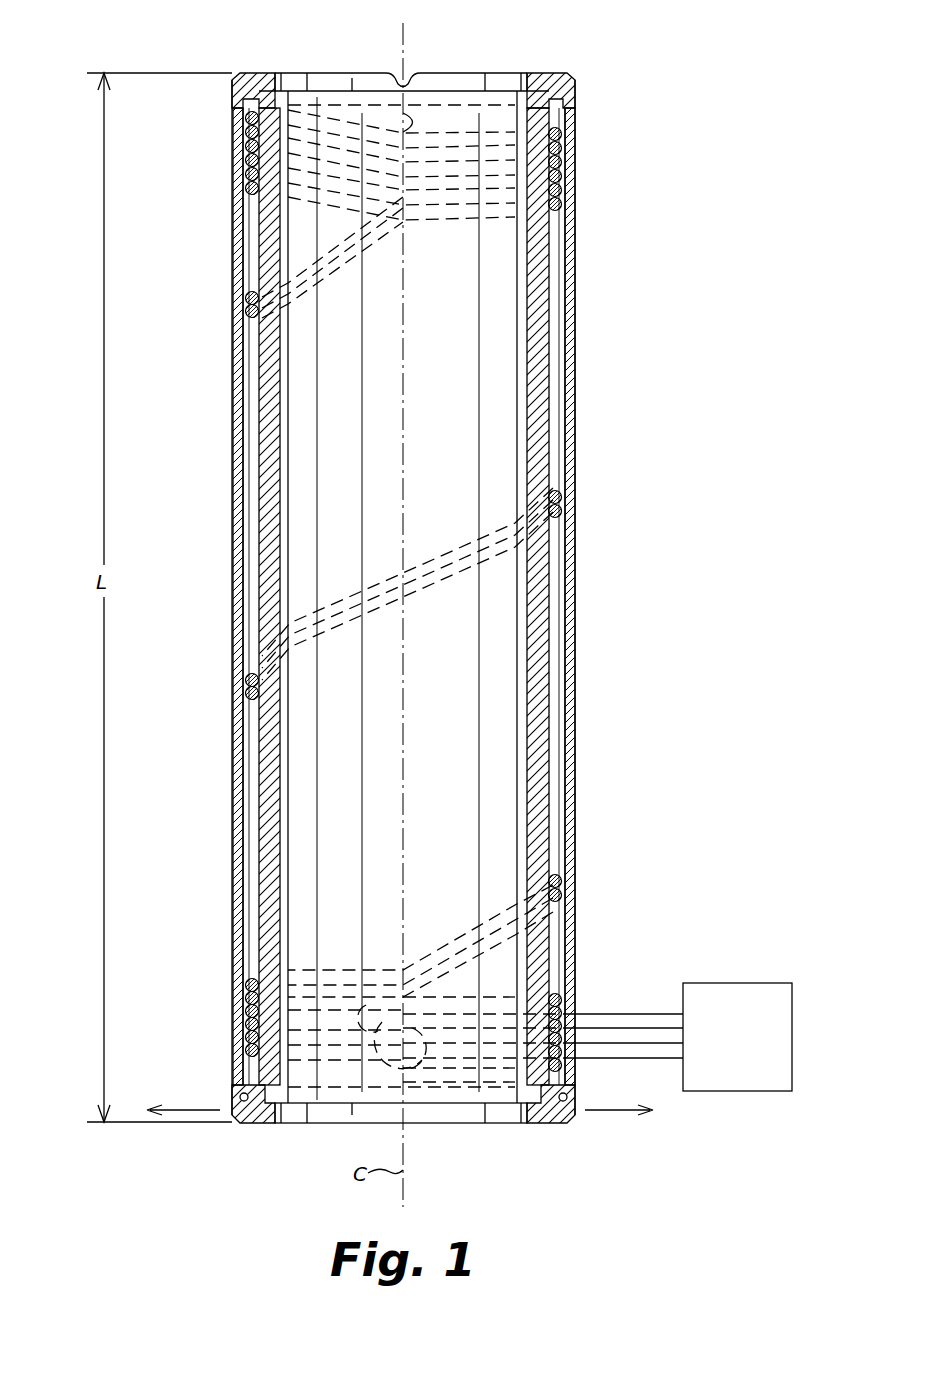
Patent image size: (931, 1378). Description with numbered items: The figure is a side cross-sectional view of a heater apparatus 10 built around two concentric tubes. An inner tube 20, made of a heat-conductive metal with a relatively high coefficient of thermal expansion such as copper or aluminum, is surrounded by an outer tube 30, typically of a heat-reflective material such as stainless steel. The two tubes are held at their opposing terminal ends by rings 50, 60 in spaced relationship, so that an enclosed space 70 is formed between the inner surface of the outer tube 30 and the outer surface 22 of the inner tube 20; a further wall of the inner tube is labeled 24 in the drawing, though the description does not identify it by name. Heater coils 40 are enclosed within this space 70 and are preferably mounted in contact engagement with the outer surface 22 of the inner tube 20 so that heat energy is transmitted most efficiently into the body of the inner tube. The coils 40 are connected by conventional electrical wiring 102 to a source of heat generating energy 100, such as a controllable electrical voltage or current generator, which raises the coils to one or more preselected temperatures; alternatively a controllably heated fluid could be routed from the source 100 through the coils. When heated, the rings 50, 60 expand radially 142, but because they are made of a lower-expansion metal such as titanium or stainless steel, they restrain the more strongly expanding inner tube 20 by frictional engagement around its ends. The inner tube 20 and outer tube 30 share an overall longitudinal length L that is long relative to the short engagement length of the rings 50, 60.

The heater apparatus 10 is at (641, 104).
The inner tube 20 is at (556, 298).
The outer surface of the inner tube 22 is at (529, 352).
The intermediate sleeve 24 is at (533, 347).
The outer tube 30 is at (582, 411).
The heater coils 40 is at (562, 172).
The ring 50 is at (546, 73).
The ring 60 is at (540, 1124).
The enclosed space 70 is at (249, 492).
The source of heat generating energy 100 is at (762, 1050).
The electrical wiring 102 is at (608, 1047).
The radial expansion of the rings 142 is at (192, 1109).